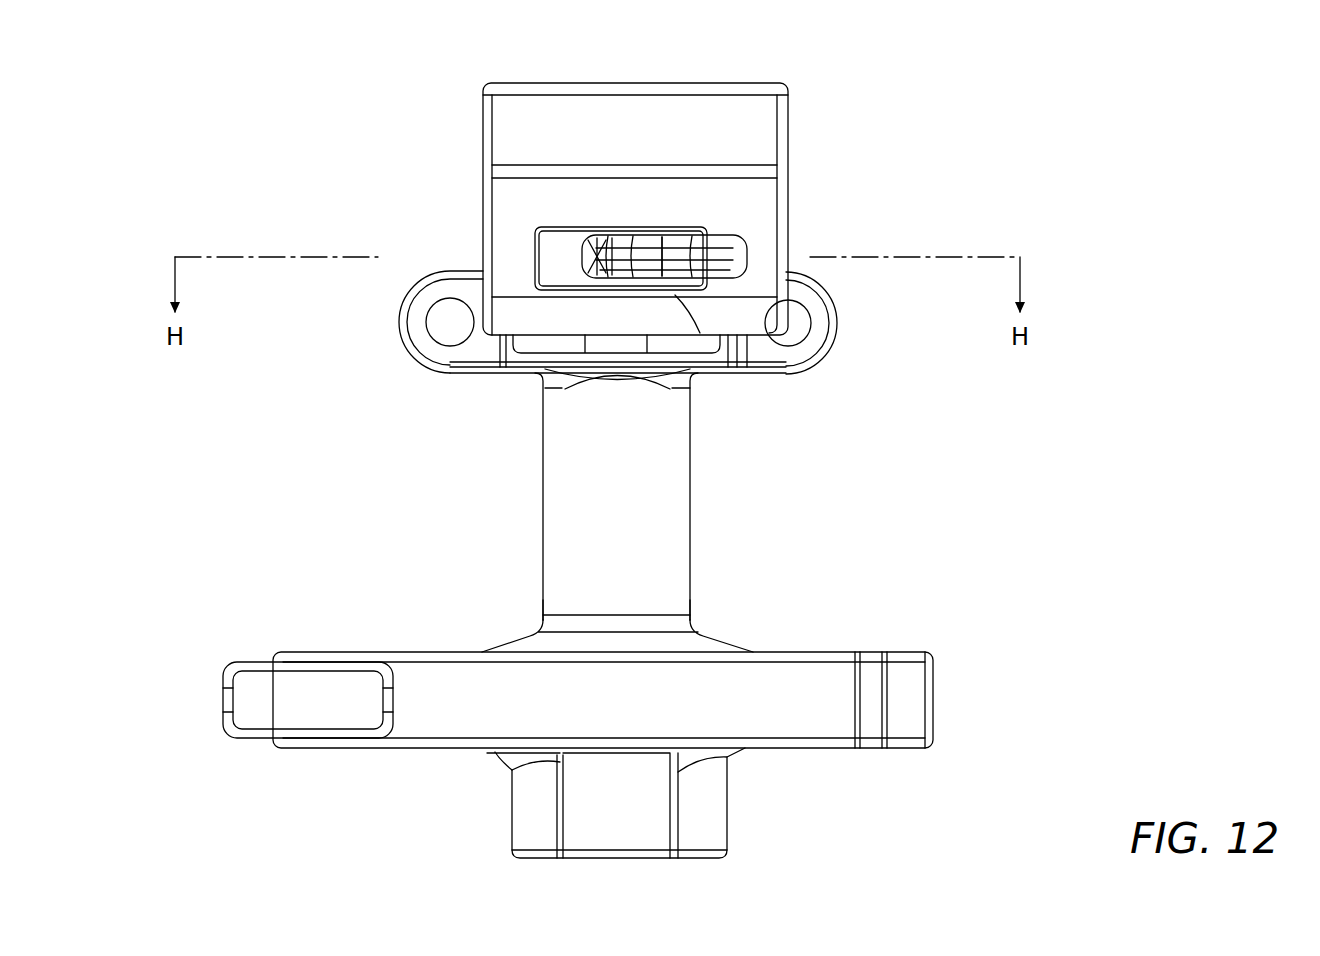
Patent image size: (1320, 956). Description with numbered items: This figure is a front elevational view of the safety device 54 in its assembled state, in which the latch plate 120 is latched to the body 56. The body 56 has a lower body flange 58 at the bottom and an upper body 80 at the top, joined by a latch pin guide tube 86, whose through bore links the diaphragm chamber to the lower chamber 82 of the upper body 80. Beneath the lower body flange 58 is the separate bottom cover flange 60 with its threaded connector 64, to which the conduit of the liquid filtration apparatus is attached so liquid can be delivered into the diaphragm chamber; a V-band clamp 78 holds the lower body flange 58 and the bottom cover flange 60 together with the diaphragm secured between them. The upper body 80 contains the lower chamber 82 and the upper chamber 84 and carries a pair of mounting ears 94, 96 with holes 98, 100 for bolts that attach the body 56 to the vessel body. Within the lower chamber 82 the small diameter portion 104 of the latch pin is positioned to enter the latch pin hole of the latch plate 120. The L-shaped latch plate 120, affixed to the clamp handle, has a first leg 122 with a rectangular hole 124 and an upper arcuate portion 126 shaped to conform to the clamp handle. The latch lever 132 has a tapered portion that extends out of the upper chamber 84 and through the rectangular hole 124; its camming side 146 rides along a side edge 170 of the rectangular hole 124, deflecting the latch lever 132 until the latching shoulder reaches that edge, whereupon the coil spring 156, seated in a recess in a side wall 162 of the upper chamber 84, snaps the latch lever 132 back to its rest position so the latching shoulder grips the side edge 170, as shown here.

The safety device 54 is at (995, 745).
The body 56 is at (793, 463).
The lower body flange 58 is at (700, 643).
The bottom cover flange 60 is at (497, 757).
The threaded connector 64 is at (702, 813).
The V-band clamp 78 is at (903, 683).
The upper body 80 is at (508, 383).
The lower chamber 82 is at (493, 365).
The upper chamber 84 is at (600, 235).
The latch pin guide tube 86 is at (575, 502).
The mounting ear 94 is at (425, 284).
The mounting ear 96 is at (815, 303).
The hole 98 is at (440, 336).
The hole 100 is at (795, 335).
The small diameter portion 104 is at (558, 348).
The latch plate 120 is at (795, 203).
The first leg 122 is at (505, 196).
The rectangular hole 124 is at (530, 238).
The upper arcuate portion 126 is at (500, 135).
The latch lever 132 is at (668, 232).
The camming side 146 is at (740, 246).
The second coil spring 156 is at (612, 238).
The side wall 162 is at (590, 255).
The side edge 170 is at (675, 295).